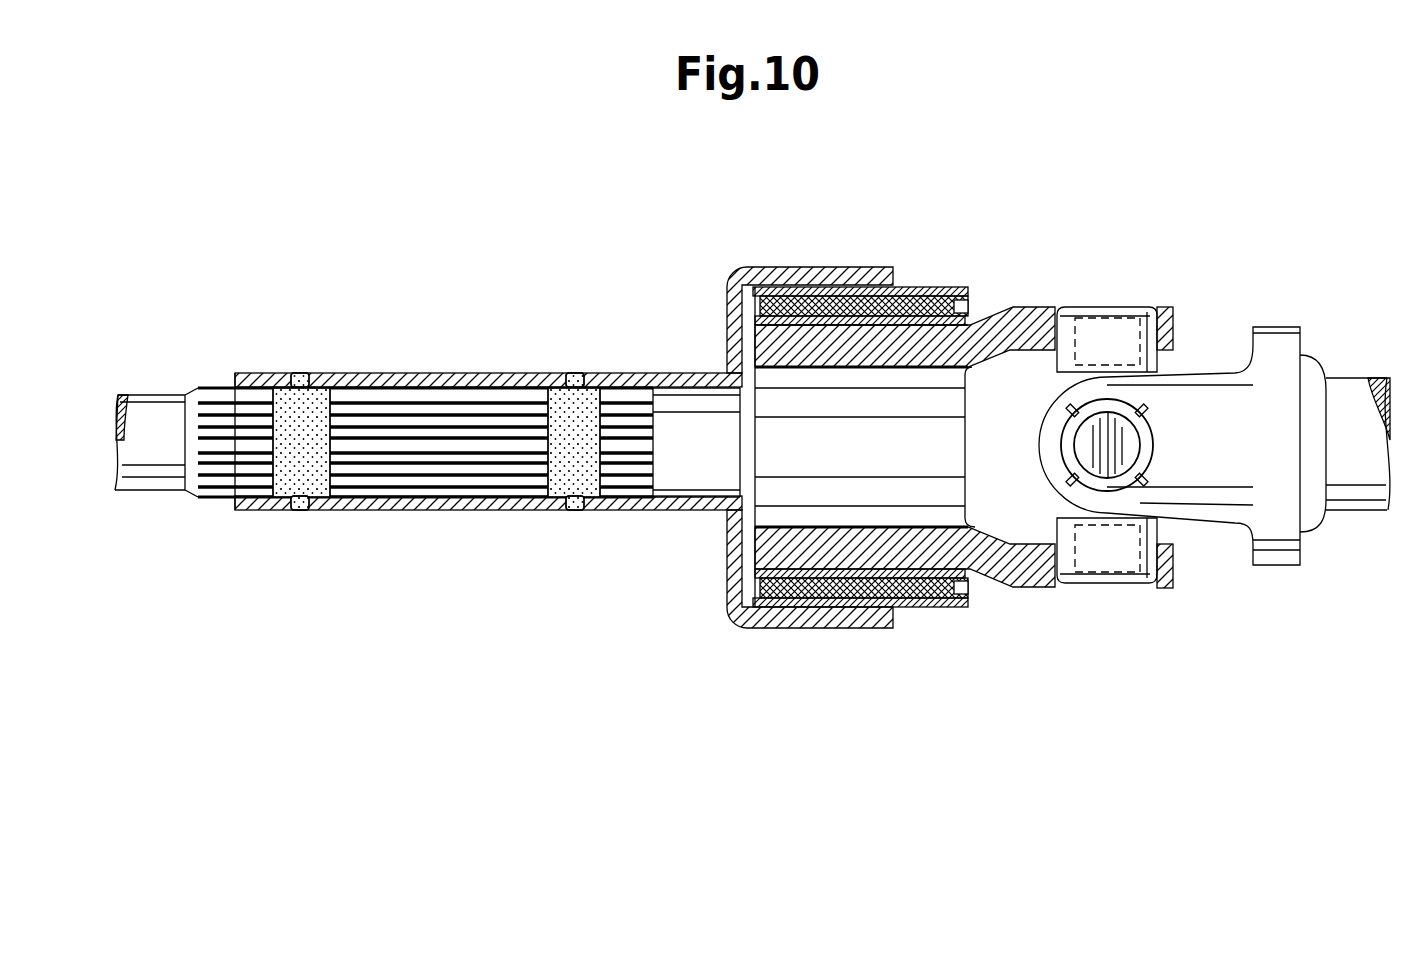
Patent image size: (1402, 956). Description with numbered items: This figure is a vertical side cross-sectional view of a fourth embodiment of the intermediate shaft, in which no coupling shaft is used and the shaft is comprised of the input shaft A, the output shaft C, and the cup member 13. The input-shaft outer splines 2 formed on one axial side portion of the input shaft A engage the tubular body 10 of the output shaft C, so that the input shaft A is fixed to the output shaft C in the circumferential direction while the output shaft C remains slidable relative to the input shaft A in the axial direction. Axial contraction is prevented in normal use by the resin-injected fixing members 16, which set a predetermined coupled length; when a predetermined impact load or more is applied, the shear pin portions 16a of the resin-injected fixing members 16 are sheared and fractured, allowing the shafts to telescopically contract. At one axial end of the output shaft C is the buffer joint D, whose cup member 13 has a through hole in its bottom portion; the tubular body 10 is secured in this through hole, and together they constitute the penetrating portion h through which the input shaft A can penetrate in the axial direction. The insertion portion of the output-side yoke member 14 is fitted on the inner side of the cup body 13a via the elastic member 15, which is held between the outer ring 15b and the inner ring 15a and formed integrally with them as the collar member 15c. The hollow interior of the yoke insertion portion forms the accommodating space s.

The input shaft A is at (178, 497).
The output shaft C is at (494, 364).
The buffer joint D is at (811, 257).
The input-shaft outer splines 2 is at (425, 507).
The tubular body 10 is at (478, 512).
The cup member 13 is at (905, 377).
The cup body 13a is at (843, 267).
The output-side yoke member 14 is at (1055, 298).
The elastic member 15 is at (913, 506).
The inner ring 15a is at (850, 567).
The outer ring 15b is at (925, 612).
The collar member 15c is at (947, 620).
The resin-injected fixing members 16 is at (297, 508).
The shear pin portions 16a is at (300, 380).
The penetrating portion h is at (756, 452).
The accommodating space s is at (916, 486).